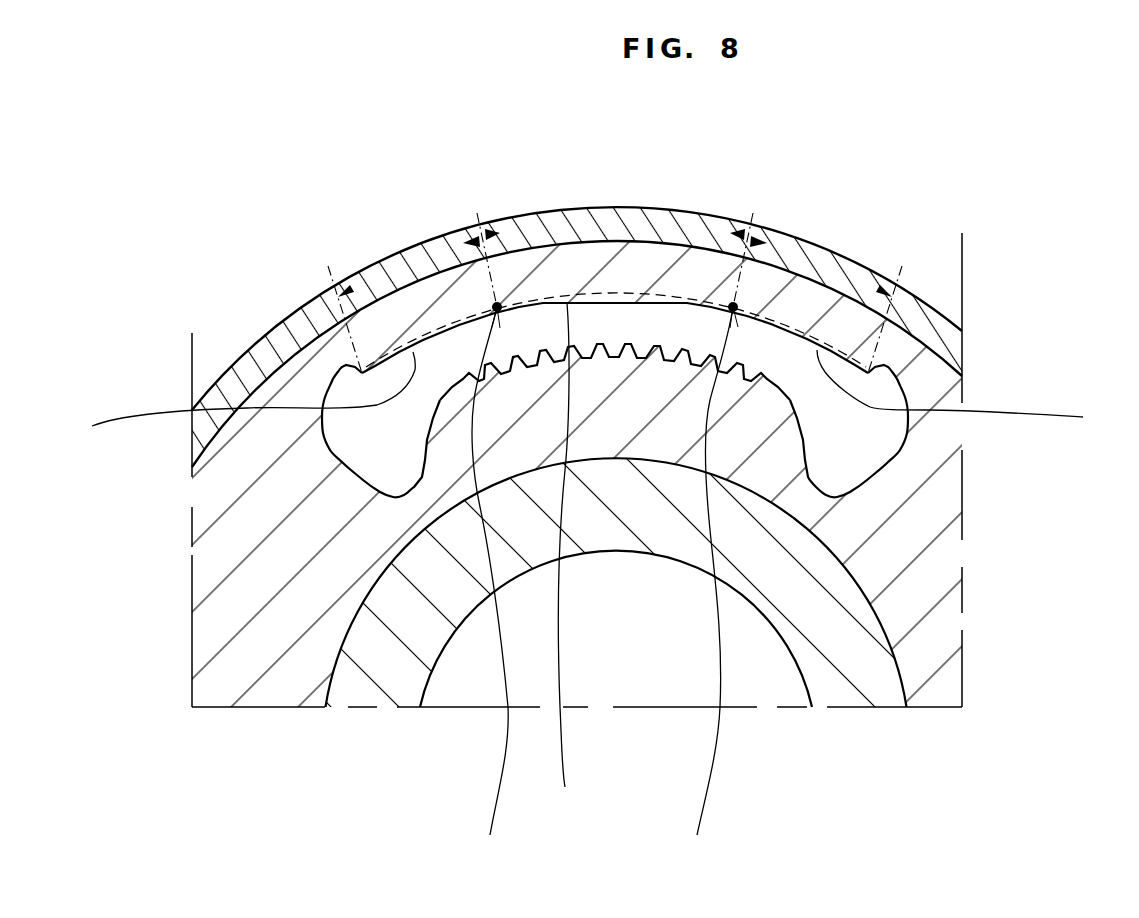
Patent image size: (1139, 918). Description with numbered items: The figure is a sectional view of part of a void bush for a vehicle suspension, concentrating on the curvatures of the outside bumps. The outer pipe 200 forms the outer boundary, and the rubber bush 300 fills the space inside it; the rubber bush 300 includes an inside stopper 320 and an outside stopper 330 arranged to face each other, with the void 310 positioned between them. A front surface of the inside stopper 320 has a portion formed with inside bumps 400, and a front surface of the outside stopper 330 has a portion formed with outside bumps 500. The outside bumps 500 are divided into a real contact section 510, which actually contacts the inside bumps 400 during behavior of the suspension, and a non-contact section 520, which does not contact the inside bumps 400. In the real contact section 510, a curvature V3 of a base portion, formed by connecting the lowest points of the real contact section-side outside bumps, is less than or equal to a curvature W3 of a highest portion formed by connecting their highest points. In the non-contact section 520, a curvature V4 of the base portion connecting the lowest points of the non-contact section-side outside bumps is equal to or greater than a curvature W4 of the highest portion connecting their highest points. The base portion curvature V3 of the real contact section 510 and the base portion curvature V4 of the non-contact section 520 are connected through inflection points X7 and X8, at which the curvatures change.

The outer pipe 200 is at (283, 330).
The rubber bush 300 is at (210, 578).
The void 310 is at (370, 438).
The inside stopper 320 is at (613, 508).
The outside stopper 330 is at (547, 282).
The inside bumps 400 is at (787, 368).
The outside bumps 500 is at (633, 300).
The real contact section 510 is at (605, 217).
The non-contact section 520 is at (408, 258).
The base portion curvature of the real contact section V3 is at (683, 298).
The base portion curvature of the non-contact section V4 is at (457, 313).
The highest portion curvature of the real contact section W3 is at (568, 560).
The highest portion curvature of the non-contact section W4 is at (591, 395).
The inflection point X7 is at (488, 587).
The inflection point X8 is at (704, 587).